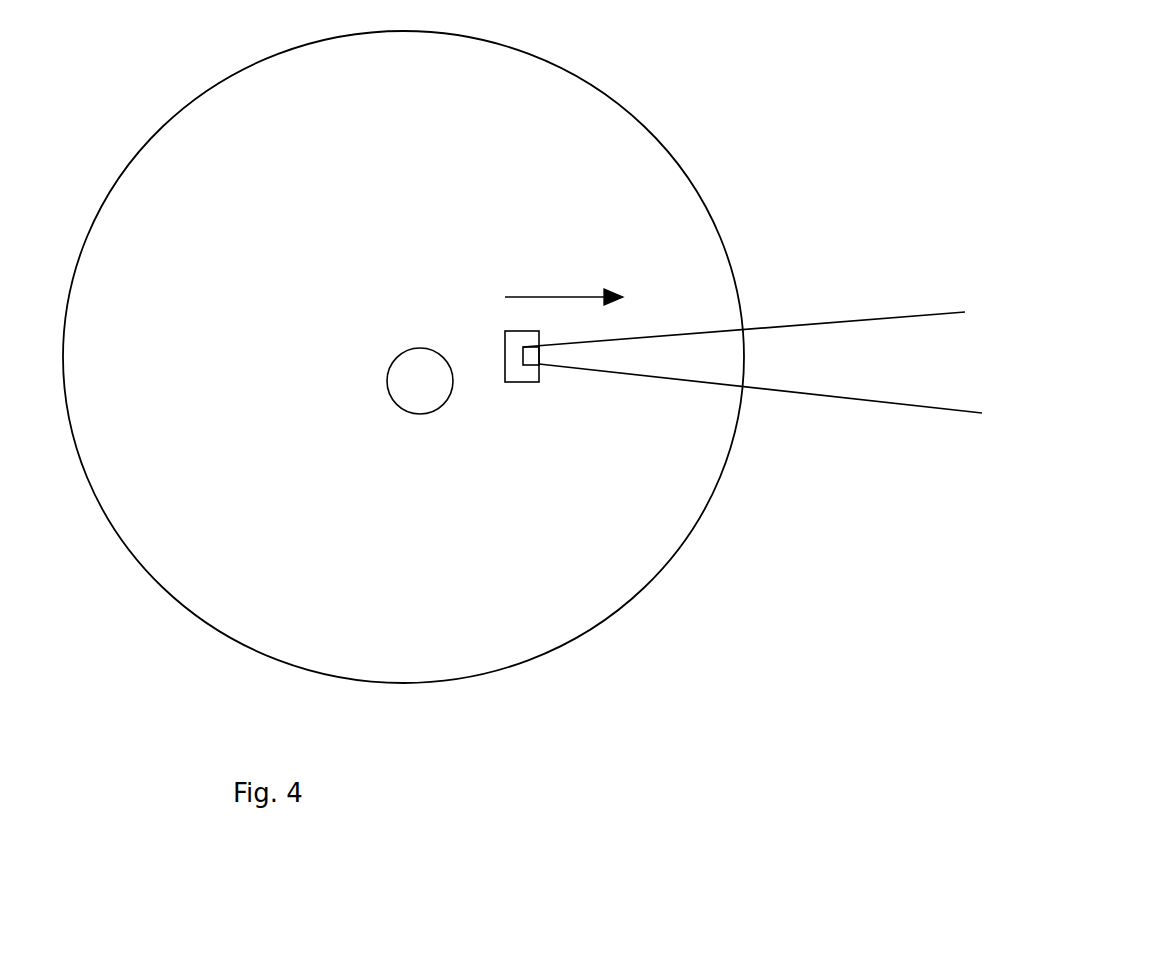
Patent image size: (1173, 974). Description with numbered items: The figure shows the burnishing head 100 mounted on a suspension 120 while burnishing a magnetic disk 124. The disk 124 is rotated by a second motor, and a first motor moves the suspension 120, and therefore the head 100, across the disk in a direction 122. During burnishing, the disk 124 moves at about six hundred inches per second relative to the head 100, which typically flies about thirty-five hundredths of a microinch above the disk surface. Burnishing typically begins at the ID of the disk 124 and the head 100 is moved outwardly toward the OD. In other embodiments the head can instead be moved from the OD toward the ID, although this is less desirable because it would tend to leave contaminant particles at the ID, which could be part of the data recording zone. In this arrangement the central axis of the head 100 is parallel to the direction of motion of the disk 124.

The disk 124 is at (403, 357).
The direction 122 is at (573, 297).
The head 100 is at (480, 406).
The suspension 120 is at (812, 363).
The inner diameter ID is at (388, 398).
The outer diameter OD is at (707, 497).